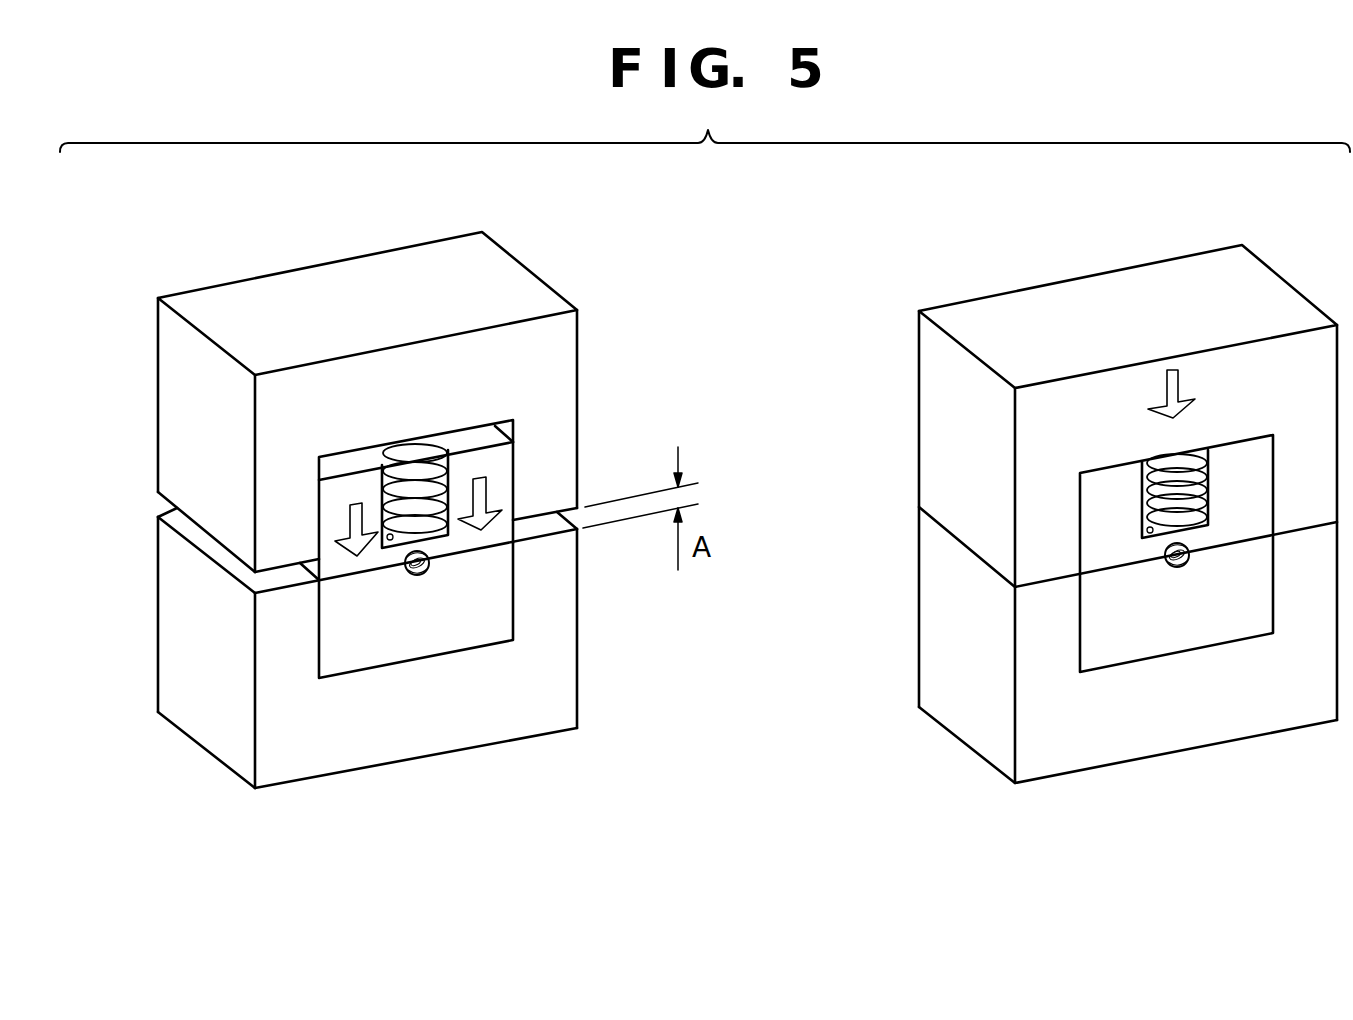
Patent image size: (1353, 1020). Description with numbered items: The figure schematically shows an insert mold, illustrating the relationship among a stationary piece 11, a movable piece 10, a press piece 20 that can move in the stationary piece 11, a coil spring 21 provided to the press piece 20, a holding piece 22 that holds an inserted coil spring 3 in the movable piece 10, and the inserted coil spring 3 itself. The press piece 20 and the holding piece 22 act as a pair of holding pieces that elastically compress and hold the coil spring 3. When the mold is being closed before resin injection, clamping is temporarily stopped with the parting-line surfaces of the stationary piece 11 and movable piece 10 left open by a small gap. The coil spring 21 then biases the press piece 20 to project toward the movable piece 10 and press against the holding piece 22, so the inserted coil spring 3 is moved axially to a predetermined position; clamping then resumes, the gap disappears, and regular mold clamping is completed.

The stationary piece 11 is at (185, 415).
The movable piece 10 is at (185, 612).
The press piece 20 is at (513, 478).
The coil spring 21 is at (448, 443).
The holding piece 22 is at (488, 604).
The inserted coil spring 3 is at (417, 577).